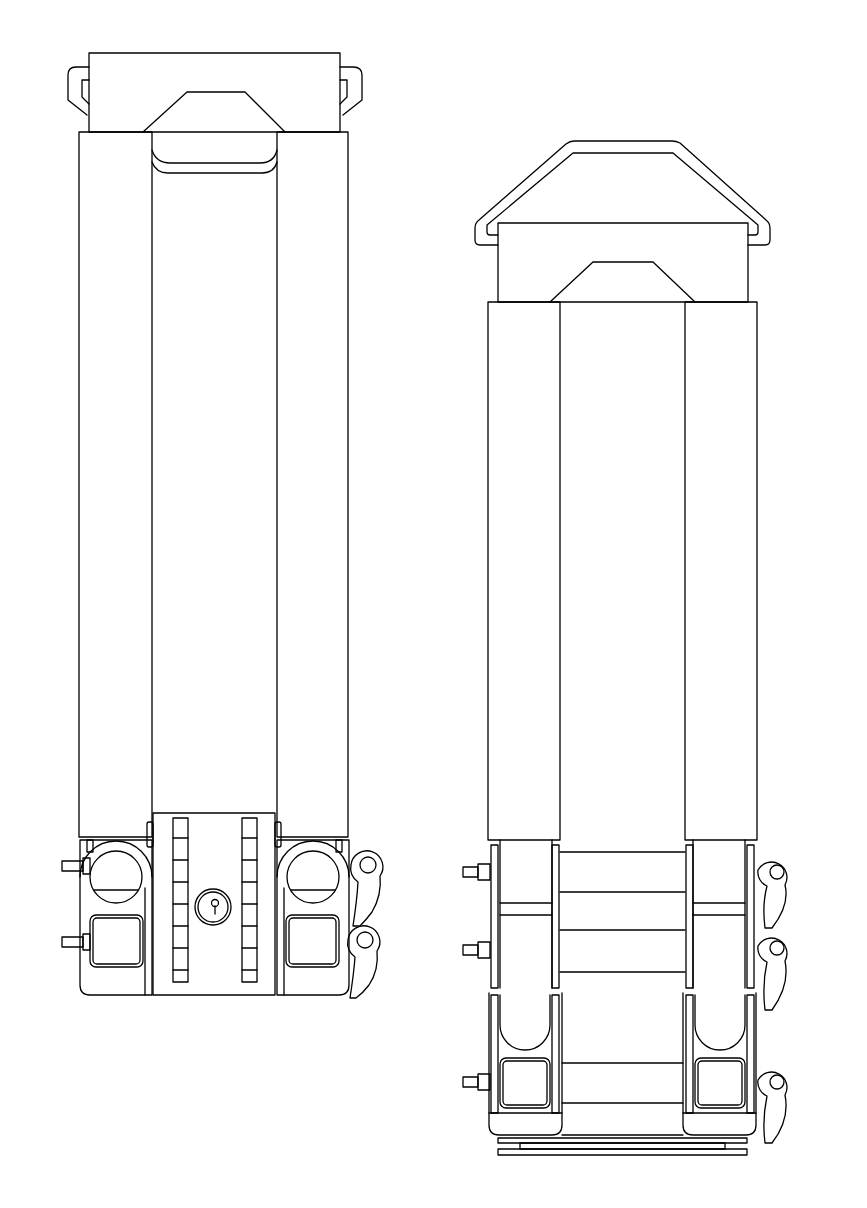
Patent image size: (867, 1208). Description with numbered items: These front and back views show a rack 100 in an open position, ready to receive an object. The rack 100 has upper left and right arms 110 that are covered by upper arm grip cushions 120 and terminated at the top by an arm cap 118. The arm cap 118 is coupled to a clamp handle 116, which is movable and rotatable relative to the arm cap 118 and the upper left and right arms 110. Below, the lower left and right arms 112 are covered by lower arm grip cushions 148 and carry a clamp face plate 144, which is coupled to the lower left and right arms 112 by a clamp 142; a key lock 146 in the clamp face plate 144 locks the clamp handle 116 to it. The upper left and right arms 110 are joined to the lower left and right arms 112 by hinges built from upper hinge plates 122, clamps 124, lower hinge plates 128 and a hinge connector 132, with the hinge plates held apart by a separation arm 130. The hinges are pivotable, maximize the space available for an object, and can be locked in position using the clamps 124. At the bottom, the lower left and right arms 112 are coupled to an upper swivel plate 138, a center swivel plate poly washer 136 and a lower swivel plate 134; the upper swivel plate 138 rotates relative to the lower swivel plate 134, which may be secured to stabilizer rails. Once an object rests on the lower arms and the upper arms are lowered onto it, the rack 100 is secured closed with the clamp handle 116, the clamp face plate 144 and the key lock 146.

In FIG. 5, the rack 100 is at (290, 39).
In FIG. 6, the rack 100 is at (740, 109).
In FIG. 6, the upper left and right arms 110 is at (527, 860).
In FIG. 5, the lower left and right arms 112 is at (100, 927).
In FIG. 5, the clamp handle 116 is at (355, 85).
In FIG. 6, the clamp handle 116 is at (603, 148).
In FIG. 5, the arm cap 118 is at (133, 60).
In FIG. 6, the arm cap 118 is at (730, 270).
In FIG. 5, the upper arm grip cushions 120 is at (296, 505).
In FIG. 6, the upper arm grip cushions 120 is at (700, 593).
In FIG. 6, the upper hinge plates 122 is at (557, 927).
In FIG. 5, the clamps 124 is at (371, 849).
In FIG. 6, the clamps 124 is at (788, 897).
In FIG. 6, the lower hinge plates 128 is at (557, 1052).
In FIG. 6, the separation arm 130 is at (623, 865).
In FIG. 6, the hinge connector 132 is at (522, 1013).
In FIG. 6, the lower swivel plate 134 is at (535, 1152).
In FIG. 6, the center swivel plate poly washer 136 is at (698, 1143).
In FIG. 6, the upper swivel plate 138 is at (618, 1142).
In FIG. 5, the clamp 142 is at (373, 925).
In FIG. 5, the clamp face plate 144 is at (230, 827).
In FIG. 5, the key lock 146 is at (219, 891).
In FIG. 5, the lower arm grip cushions 148 is at (107, 982).
In FIG. 6, the lower arm grip cushions 148 is at (500, 1127).